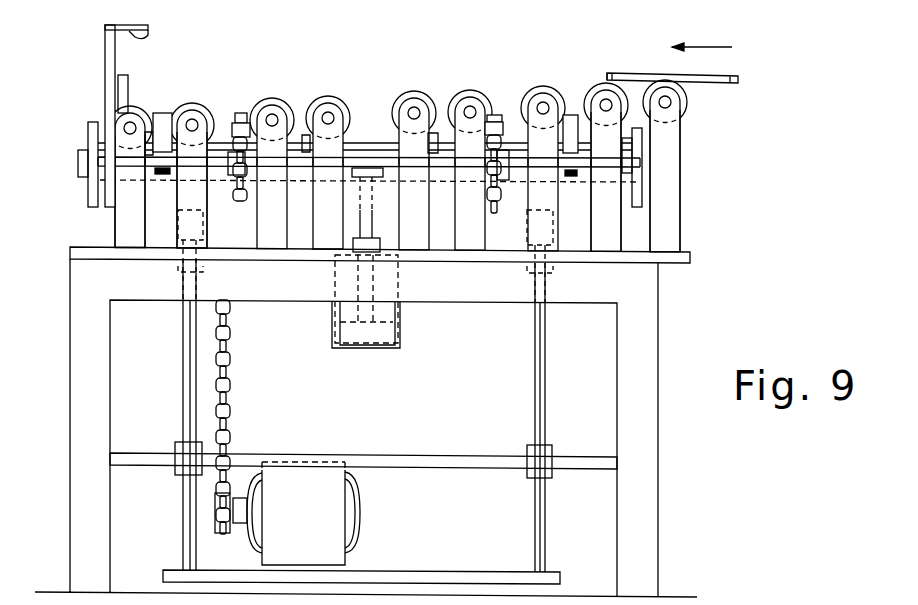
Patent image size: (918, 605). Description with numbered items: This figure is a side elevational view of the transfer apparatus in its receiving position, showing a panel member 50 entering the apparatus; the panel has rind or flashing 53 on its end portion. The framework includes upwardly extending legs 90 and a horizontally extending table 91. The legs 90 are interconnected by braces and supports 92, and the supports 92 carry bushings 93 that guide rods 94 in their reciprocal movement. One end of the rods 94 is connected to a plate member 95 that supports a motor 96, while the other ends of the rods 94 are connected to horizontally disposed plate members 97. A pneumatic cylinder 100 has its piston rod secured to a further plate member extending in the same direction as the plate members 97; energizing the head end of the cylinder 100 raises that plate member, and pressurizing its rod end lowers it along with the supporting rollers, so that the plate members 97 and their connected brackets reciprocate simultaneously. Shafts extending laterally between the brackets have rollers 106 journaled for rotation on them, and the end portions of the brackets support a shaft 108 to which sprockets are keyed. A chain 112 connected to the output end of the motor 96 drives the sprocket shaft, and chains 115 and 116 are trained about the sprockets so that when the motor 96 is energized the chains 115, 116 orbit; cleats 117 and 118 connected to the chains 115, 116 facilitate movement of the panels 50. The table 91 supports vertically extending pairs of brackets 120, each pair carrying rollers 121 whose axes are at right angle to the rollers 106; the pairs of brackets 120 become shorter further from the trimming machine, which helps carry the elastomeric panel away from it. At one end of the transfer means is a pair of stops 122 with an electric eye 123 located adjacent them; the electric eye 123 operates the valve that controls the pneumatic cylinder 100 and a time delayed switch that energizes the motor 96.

The panel member 50 is at (727, 76).
The rind or flashing 53 is at (604, 76).
The legs 90 is at (97, 563).
The table 91 is at (692, 258).
The supports 92 is at (457, 462).
The bushings 93 is at (548, 445).
The rods 94 is at (187, 523).
The plate member 95 is at (475, 580).
The motor 96 is at (233, 492).
The plate members 97 is at (620, 193).
The pneumatic cylinder 100 is at (357, 350).
The rollers 106 is at (183, 89).
The shaft 108 is at (622, 162).
The chain 112 is at (233, 392).
The chain 115 is at (244, 112).
The chain 116 is at (490, 114).
The cleat 117 is at (507, 112).
The cleat 118 is at (236, 112).
The brackets 120 is at (182, 232).
The rollers 121 is at (206, 101).
The stops 122 is at (115, 85).
The electric eye 123 is at (147, 36).